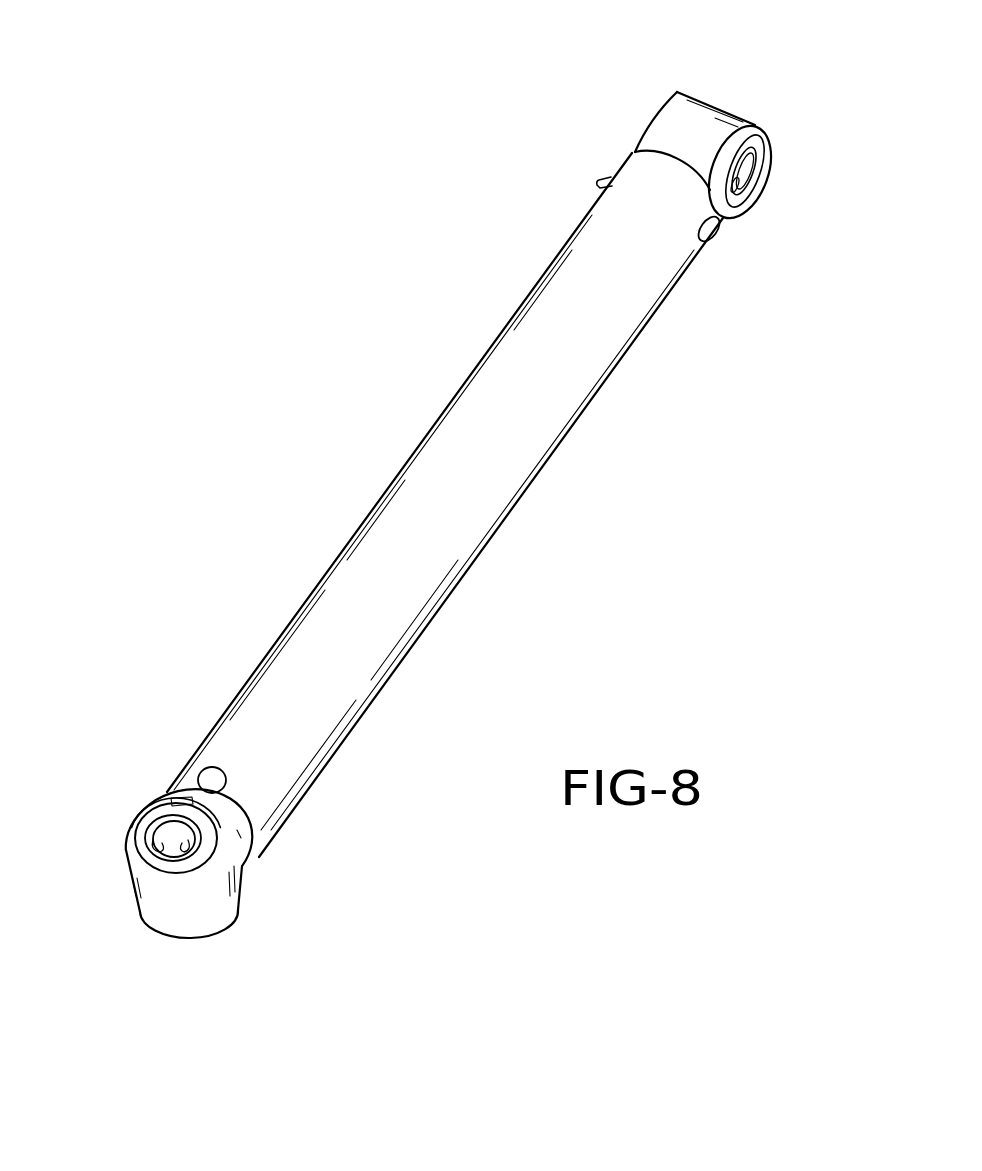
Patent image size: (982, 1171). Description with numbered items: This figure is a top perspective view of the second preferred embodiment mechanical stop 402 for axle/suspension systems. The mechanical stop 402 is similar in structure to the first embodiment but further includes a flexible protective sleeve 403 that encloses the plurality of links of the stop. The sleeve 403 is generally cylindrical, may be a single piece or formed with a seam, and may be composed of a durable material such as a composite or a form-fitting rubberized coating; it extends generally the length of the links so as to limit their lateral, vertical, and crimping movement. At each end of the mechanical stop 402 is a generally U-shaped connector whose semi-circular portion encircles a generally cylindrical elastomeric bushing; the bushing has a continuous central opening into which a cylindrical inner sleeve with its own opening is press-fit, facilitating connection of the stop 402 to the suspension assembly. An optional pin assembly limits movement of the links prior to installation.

The second preferred embodiment mechanical stop 402 is at (356, 464).
The flexible protective sleeve 403 is at (460, 582).